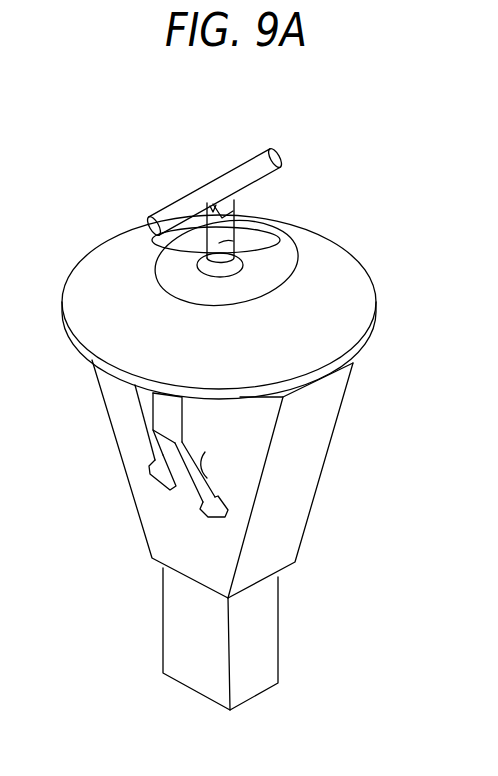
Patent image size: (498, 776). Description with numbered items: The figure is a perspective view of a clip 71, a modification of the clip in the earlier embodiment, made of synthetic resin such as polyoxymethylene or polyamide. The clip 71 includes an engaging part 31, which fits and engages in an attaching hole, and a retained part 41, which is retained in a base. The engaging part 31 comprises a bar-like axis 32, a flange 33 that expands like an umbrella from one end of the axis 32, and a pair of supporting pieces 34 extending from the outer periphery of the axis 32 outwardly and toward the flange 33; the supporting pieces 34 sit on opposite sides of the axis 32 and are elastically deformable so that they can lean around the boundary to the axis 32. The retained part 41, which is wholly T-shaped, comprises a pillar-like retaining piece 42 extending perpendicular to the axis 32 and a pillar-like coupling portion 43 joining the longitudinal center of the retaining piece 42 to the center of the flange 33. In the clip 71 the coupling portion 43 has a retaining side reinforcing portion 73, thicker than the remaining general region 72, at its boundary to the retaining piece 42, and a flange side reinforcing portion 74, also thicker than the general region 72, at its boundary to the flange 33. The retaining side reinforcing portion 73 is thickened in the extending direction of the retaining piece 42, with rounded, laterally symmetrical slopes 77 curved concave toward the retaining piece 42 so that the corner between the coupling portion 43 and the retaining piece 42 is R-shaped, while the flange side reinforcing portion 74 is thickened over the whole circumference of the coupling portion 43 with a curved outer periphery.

The clip 71 is at (86, 183).
The general region 72 is at (160, 239).
The retaining side reinforcing portion 73 is at (232, 203).
The flange side reinforcing portion 74 is at (187, 258).
The slope 77 is at (207, 198).
The retained part 41 is at (413, 170).
The retaining piece 42 is at (283, 160).
The coupling portion 43 is at (303, 231).
The engaging part 31 is at (437, 362).
The axis 32 is at (203, 488).
The flange 33 is at (345, 343).
The supporting pieces 34 is at (124, 466).